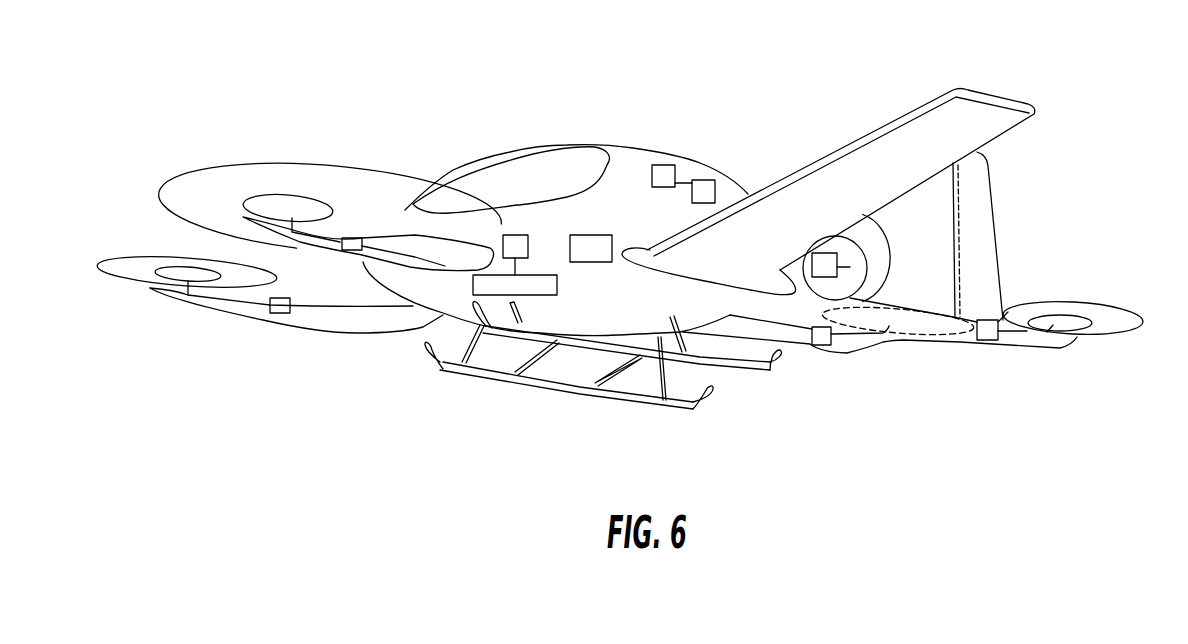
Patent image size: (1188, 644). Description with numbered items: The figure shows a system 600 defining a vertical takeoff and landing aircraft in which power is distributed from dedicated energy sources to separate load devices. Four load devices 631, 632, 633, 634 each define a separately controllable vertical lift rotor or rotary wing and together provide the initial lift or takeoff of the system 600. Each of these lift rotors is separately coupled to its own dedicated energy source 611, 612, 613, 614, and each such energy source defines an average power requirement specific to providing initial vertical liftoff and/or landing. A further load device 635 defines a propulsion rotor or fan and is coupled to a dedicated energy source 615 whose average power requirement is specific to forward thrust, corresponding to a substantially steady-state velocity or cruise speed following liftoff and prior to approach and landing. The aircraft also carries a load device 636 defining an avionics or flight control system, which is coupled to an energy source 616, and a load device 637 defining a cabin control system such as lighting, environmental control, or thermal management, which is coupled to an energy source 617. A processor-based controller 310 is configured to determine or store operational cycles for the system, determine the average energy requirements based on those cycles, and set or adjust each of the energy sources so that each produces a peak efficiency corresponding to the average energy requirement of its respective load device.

The system 600 is at (648, 78).
The load device 631 is at (293, 150).
The load device 632 is at (144, 289).
The load device 633 is at (1090, 294).
The load device 634 is at (881, 357).
The load device 635 is at (900, 245).
The energy source 611 is at (357, 238).
The energy source 612 is at (275, 313).
The energy source 613 is at (985, 341).
The energy source 614 is at (820, 346).
The energy source 615 is at (822, 260).
The energy source 616 is at (555, 287).
The energy source 617 is at (705, 191).
The load device 636 is at (515, 236).
The load device 637 is at (664, 172).
The controller 310 is at (595, 236).